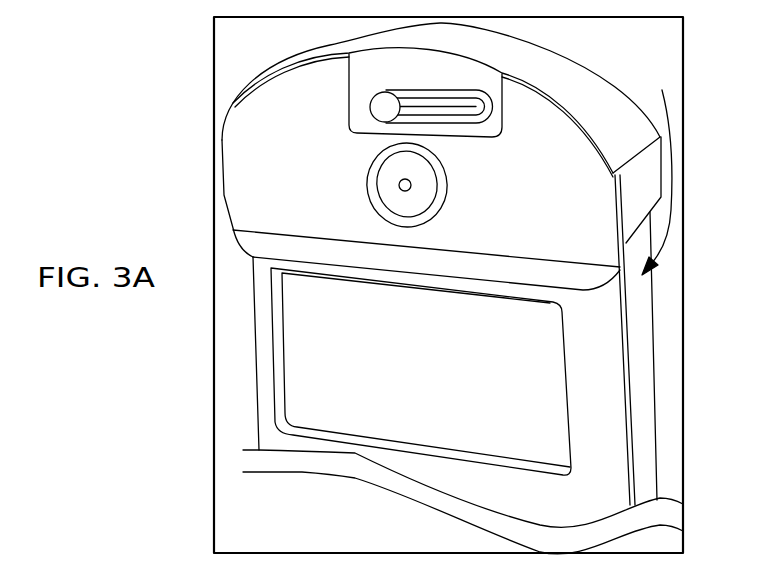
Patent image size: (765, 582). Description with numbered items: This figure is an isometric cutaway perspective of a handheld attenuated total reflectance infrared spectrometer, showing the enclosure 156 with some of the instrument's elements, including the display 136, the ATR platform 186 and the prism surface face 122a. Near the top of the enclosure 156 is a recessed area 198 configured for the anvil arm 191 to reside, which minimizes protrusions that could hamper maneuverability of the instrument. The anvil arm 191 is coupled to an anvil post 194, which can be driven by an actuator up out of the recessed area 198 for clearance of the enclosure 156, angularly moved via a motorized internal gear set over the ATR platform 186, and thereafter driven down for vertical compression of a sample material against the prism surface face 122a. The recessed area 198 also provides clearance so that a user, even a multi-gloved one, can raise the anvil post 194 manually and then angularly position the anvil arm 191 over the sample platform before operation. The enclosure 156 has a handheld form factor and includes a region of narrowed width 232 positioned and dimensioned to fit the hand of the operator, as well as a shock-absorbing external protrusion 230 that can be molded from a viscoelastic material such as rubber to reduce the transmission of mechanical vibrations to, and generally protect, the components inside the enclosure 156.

The enclosure 156 is at (618, 111).
The recessed area 198 is at (440, 83).
The anvil post 194 is at (374, 116).
The anvil arm 191 is at (452, 124).
The ATR platform 186 is at (422, 172).
The prism surface face 122a is at (411, 186).
The display 136 is at (432, 363).
The shock-absorbing external protrusion 230 is at (615, 405).
The region of narrowed width 232 is at (658, 167).